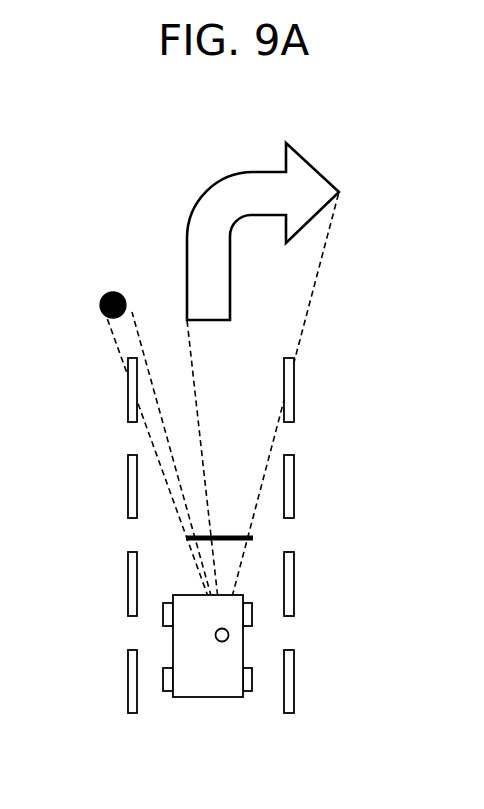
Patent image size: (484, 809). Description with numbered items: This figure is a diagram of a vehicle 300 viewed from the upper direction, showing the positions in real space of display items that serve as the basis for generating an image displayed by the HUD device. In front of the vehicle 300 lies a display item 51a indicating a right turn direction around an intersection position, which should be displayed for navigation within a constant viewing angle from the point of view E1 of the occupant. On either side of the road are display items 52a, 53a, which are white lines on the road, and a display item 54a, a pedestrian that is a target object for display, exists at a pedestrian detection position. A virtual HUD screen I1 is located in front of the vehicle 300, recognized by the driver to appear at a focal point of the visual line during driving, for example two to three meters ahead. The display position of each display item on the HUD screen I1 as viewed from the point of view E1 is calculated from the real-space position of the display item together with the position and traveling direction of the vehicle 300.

The display item 51a is at (312, 163).
The display item 54a is at (108, 293).
The display item 52a is at (128, 400).
The display item 53a is at (294, 398).
The HUD screen I1 is at (253, 541).
The point of view E1 is at (226, 630).
The vehicle 300 is at (222, 697).